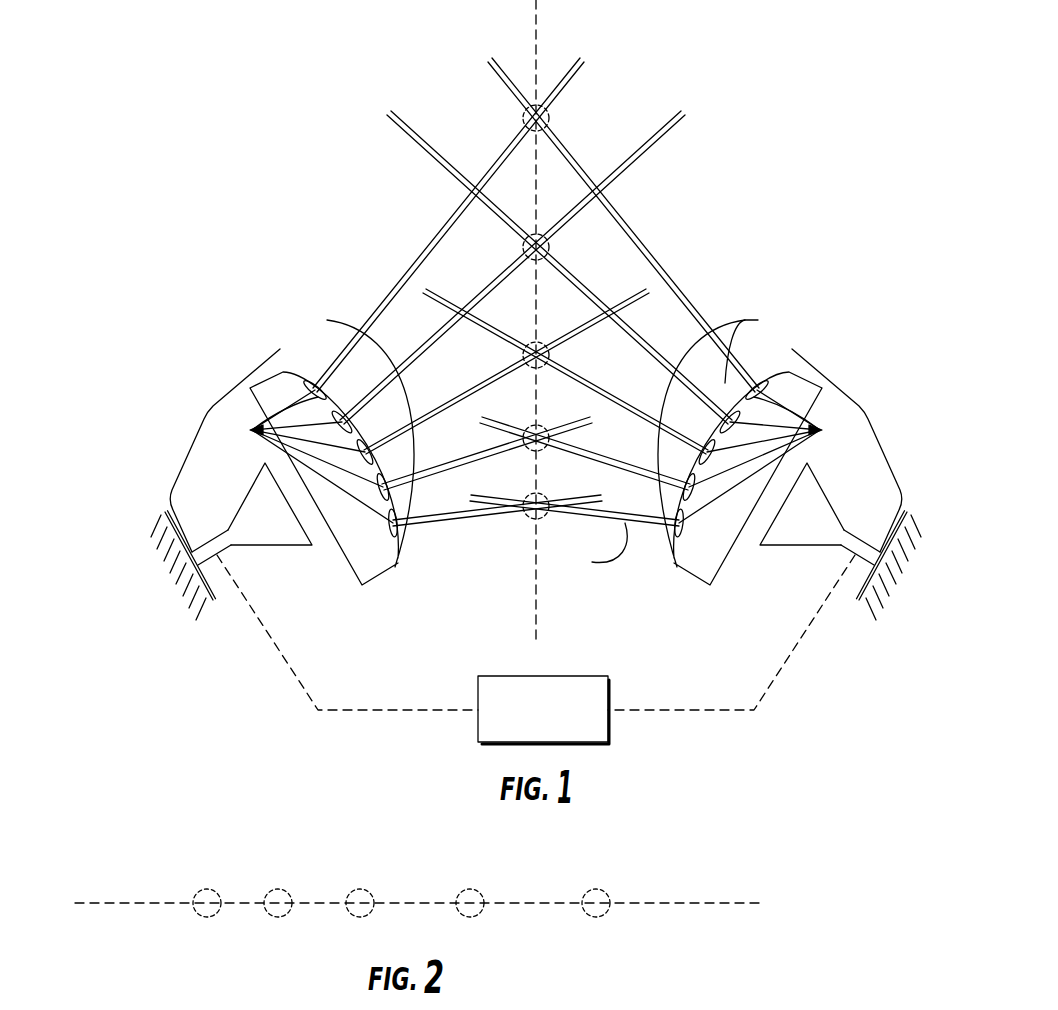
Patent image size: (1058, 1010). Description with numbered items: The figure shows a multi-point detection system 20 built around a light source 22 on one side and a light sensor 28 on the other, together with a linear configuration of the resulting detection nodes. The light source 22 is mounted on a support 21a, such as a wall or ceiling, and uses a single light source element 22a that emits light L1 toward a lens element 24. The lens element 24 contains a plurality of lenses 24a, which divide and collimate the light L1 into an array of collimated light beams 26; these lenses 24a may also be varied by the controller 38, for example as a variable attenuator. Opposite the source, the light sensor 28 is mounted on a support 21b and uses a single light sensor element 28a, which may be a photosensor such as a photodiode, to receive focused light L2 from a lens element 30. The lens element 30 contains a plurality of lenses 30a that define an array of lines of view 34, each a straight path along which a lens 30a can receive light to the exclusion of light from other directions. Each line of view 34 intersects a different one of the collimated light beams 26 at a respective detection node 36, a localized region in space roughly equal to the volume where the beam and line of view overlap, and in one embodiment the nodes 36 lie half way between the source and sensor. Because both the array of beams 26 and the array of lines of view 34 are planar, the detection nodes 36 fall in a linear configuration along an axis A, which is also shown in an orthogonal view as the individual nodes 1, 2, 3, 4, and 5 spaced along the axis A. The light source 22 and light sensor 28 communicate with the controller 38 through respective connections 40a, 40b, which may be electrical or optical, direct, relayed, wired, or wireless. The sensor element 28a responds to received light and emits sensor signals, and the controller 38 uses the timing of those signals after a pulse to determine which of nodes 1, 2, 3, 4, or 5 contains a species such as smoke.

In FIG. 1, the multi-point detection system 20 is at (774, 262).
In FIG. 1, the light source 22 is at (864, 418).
In FIG. 1, the light source element 22a is at (858, 555).
In FIG. 1, the support 21a is at (858, 598).
In FIG. 1, the lens element 24 is at (694, 562).
In FIG. 1, the lenses 24a is at (770, 456).
In FIG. 1, the collimated light beams 26 is at (681, 440).
In FIG. 1, the light sensor 28 is at (208, 418).
In FIG. 1, the light sensor element 28a is at (217, 553).
In FIG. 1, the support 21b is at (214, 595).
In FIG. 1, the lens element 30 is at (378, 562).
In FIG. 1, the lenses 30a is at (302, 456).
In FIG. 1, the lines of view 34 is at (447, 523).
In FIG. 1, the detection nodes 36 is at (549, 500).
In FIG. 1, the controller 38 is at (553, 726).
In FIG. 1, the connection 40a is at (700, 712).
In FIG. 1, the connection 40b is at (318, 698).
In FIG. 1, the light L1 is at (802, 537).
In FIG. 1, the focused light L2 is at (272, 537).
In FIG. 1, the axis A is at (541, 22).
In FIG. 2, the axis A is at (96, 900).
In FIG. 2, the detection node 1 is at (200, 889).
In FIG. 2, the detection node 2 is at (283, 889).
In FIG. 2, the detection node 3 is at (359, 889).
In FIG. 2, the detection node 4 is at (475, 889).
In FIG. 2, the detection node 5 is at (599, 889).